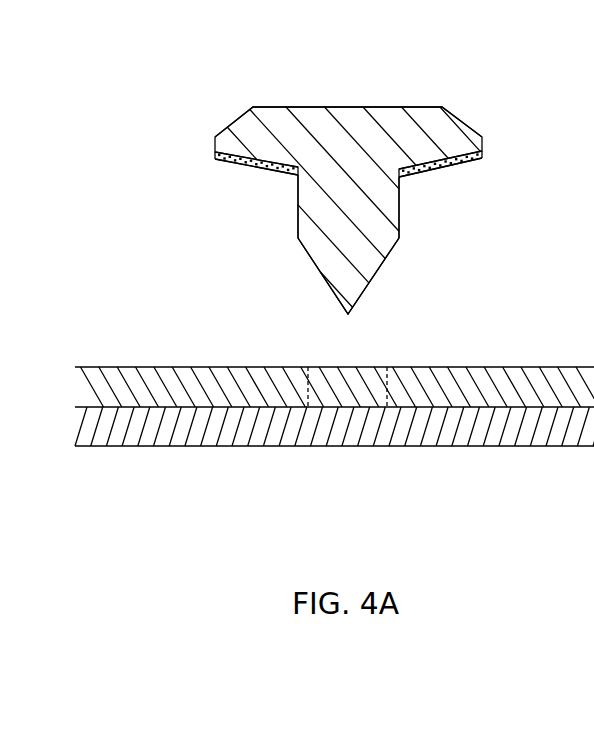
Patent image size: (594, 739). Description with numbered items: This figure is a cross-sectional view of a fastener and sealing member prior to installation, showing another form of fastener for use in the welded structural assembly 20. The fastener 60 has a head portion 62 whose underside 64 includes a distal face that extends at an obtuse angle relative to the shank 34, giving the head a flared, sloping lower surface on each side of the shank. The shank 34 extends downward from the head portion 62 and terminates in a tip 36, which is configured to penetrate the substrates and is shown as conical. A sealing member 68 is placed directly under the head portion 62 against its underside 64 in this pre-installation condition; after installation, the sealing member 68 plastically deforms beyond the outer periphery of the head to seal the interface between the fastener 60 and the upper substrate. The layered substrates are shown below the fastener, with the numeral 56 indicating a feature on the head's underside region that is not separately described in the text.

The welded structural assembly 20 is at (478, 73).
The fastener 60 is at (328, 136).
The head portion 62 is at (236, 113).
The sealing member 68 is at (217, 155).
The underside 64 is at (255, 168).
The flange underside layer 56 is at (434, 167).
The shank 34 is at (356, 215).
The tip 36 is at (340, 270).